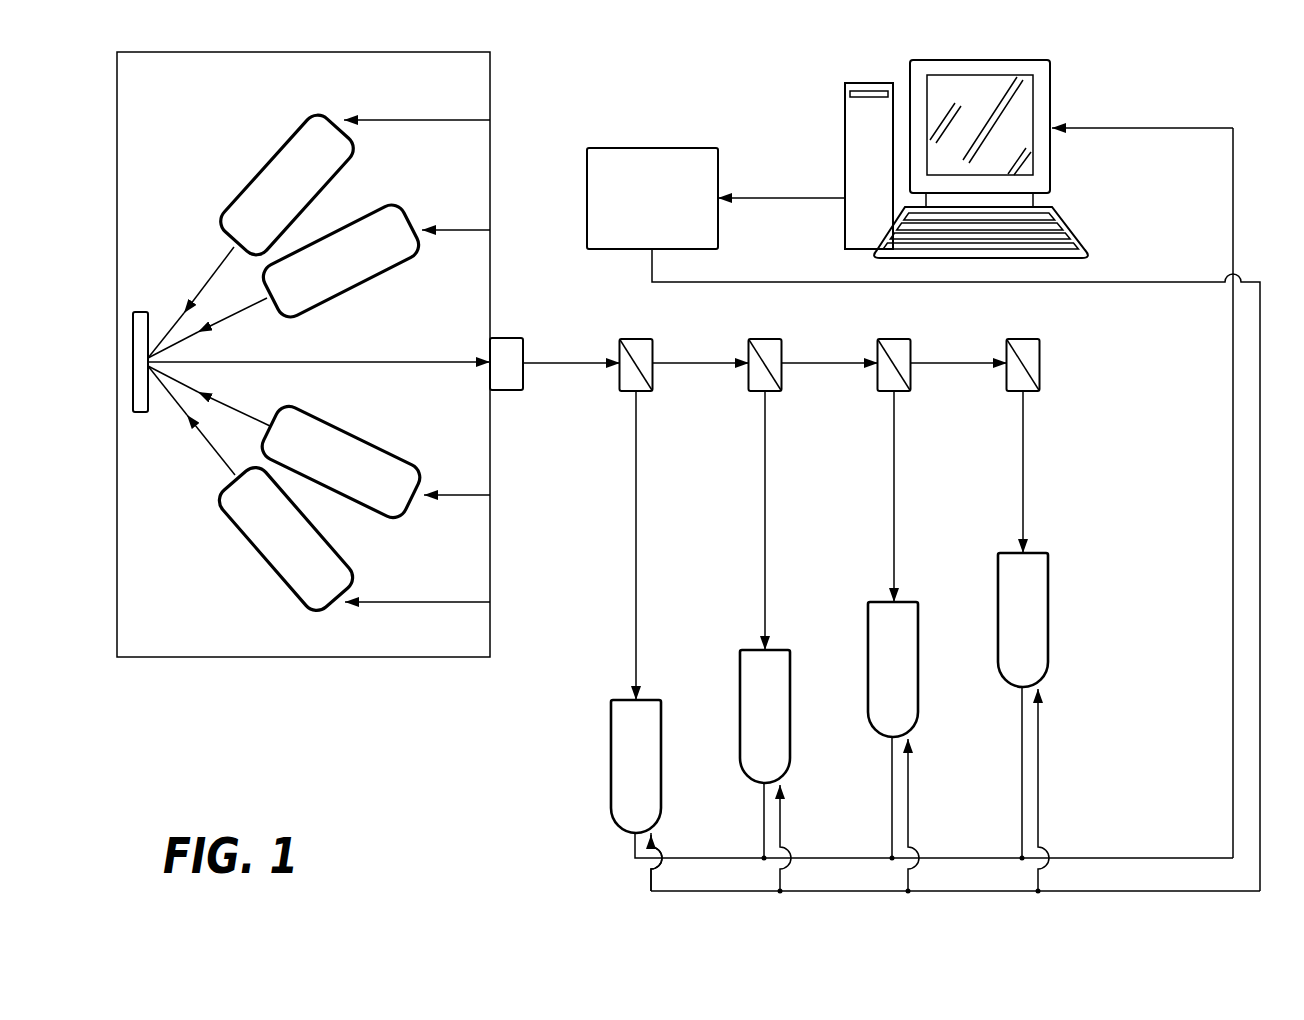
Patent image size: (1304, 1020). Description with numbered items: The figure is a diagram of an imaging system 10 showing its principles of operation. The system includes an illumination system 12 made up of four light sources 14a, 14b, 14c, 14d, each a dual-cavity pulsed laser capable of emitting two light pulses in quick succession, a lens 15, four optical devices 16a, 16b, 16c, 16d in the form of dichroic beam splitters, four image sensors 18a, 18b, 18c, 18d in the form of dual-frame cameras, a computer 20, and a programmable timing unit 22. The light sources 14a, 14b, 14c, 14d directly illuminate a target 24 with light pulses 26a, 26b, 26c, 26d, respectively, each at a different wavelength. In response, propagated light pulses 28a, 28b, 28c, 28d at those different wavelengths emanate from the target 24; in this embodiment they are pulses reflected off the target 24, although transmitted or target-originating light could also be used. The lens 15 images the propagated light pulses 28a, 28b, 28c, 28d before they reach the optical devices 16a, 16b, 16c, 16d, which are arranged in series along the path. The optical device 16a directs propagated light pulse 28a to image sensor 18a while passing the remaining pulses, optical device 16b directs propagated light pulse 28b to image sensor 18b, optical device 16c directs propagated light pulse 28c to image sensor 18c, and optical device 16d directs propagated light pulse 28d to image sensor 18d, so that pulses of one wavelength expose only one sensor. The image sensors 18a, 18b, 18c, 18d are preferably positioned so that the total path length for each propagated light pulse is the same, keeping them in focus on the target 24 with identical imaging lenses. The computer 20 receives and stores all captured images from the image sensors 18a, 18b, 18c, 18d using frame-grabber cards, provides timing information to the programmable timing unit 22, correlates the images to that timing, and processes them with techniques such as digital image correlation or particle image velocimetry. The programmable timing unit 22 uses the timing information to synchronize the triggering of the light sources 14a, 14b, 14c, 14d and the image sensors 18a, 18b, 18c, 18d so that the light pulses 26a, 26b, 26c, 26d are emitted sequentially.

The imaging system 10 is at (1206, 96).
The illumination system 12 is at (347, 168).
The light source 14a is at (300, 141).
The light source 14b is at (358, 276).
The light source 14c is at (364, 455).
The light source 14d is at (267, 533).
The lens 15 is at (507, 338).
The optical device 16a is at (637, 339).
The optical device 16b is at (767, 339).
The optical device 16c is at (895, 339).
The optical device 16d is at (1025, 339).
The image sensor 18a is at (640, 733).
The image sensor 18b is at (770, 684).
The image sensor 18c is at (898, 635).
The image sensor 18d is at (1028, 585).
The computer 20 is at (866, 83).
The programmable timing unit 22 is at (655, 148).
The target 24 is at (140, 312).
The light pulse 26a is at (214, 275).
The light pulse 26b is at (237, 317).
The light pulse 26c is at (242, 409).
The light pulse 26d is at (212, 449).
The propagated light pulse 28a is at (300, 361).
The propagated light pulse 28b is at (698, 362).
The propagated light pulse 28c is at (830, 362).
The propagated light pulse 28d is at (959, 362).